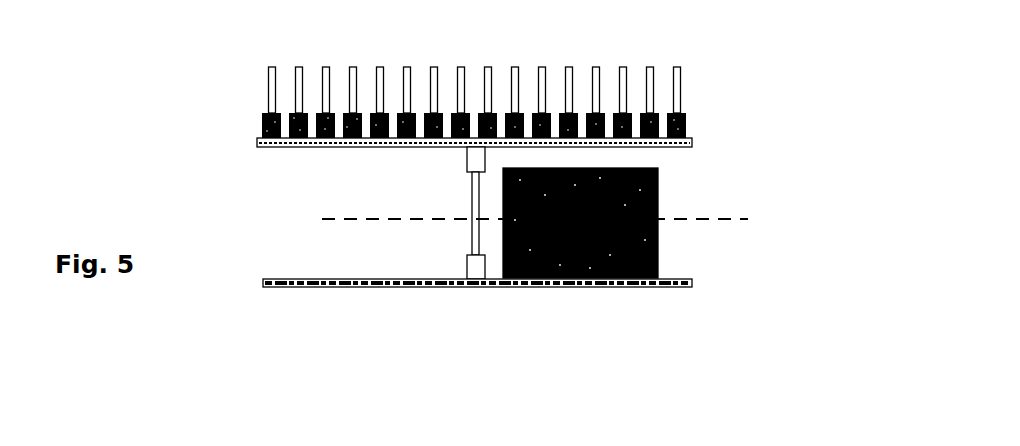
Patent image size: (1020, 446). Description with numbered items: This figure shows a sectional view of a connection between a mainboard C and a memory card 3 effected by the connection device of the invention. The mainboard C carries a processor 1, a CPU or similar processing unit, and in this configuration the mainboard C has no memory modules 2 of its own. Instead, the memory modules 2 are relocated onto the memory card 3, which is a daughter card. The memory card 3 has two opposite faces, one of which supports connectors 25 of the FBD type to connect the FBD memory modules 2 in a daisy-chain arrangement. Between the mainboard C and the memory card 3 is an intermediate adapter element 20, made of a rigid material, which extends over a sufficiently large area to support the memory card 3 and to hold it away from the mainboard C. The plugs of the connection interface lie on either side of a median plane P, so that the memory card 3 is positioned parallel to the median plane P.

The processor 1 is at (638, 233).
The memory modules 2 is at (410, 88).
The memory card 3 is at (308, 148).
The intermediate adapter element 20 is at (467, 257).
The connectors 25 is at (682, 113).
The median plane P is at (406, 216).
The mainboard C is at (305, 282).